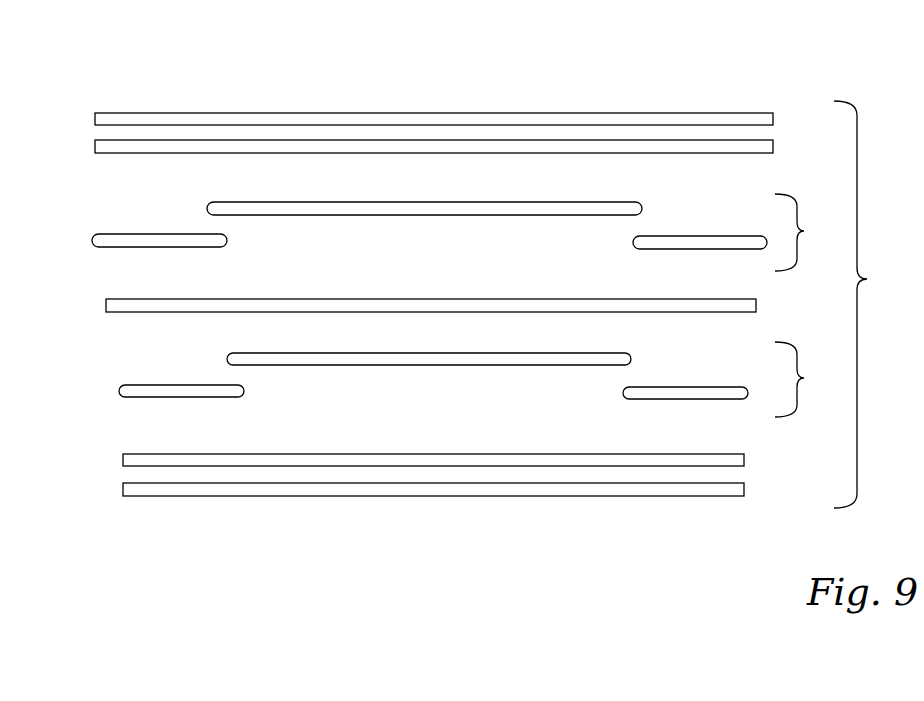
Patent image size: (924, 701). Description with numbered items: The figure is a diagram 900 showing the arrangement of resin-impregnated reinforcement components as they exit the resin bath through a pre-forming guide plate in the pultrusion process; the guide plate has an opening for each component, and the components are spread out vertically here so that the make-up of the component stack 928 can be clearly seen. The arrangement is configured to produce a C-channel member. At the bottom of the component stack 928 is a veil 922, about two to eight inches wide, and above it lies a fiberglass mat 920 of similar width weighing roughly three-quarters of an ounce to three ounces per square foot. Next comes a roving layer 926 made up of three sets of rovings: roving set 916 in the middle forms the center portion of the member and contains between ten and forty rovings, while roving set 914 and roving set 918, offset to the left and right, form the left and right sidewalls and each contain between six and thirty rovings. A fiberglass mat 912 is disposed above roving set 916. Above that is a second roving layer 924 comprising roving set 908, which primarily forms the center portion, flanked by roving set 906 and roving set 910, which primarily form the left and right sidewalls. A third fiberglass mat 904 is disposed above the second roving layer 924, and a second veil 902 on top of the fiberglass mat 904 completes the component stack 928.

The diagram 900 is at (832, 41).
The second veil 902 is at (95, 114).
The third fiberglass mat 904 is at (95, 141).
The roving set 906 is at (92, 238).
The roving set 908 is at (207, 206).
The roving set 910 is at (633, 240).
The fiberglass mat 912 is at (106, 300).
The roving set 914 is at (119, 389).
The roving set 916 is at (227, 357).
The roving set 918 is at (623, 391).
The fiberglass mat 920 is at (123, 455).
The veil 922 is at (123, 484).
The second roving layer 924 is at (808, 232).
The roving layer 926 is at (808, 379).
The component stack 928 is at (873, 304).